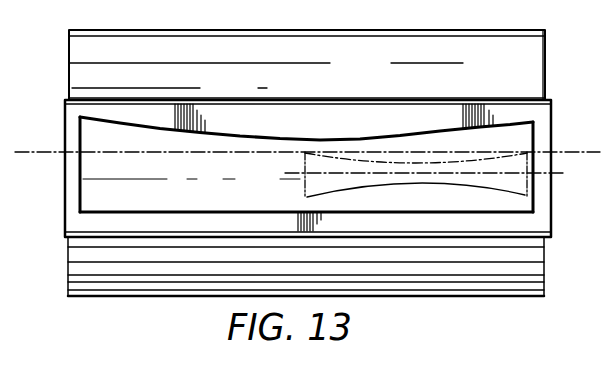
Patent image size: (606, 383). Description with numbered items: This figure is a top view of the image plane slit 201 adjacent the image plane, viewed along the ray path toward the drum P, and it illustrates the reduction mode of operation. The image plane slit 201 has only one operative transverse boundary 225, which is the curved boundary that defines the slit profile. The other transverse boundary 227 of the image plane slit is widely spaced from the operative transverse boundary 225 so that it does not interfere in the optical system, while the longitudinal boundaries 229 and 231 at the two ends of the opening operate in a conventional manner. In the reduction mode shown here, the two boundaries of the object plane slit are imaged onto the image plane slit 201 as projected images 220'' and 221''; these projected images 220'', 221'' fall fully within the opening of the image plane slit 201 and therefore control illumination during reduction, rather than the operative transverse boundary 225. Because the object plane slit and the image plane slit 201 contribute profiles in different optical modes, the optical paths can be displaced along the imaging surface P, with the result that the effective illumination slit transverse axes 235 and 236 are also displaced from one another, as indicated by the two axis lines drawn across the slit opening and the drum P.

The drum P is at (535, 78).
The image plane slit 201 is at (535, 118).
The projected image of object plane slit boundary 220'' is at (416, 182).
The projected image of object plane slit boundary 221'' is at (416, 134).
The operative transverse boundary 225 is at (148, 129).
The transverse boundary 227 is at (222, 212).
The longitudinal boundary 229 is at (83, 193).
The longitudinal boundary 231 is at (528, 206).
The effective illumination slit transverse axis 235 is at (598, 152).
The effective illumination slit transverse axis 236 is at (580, 171).